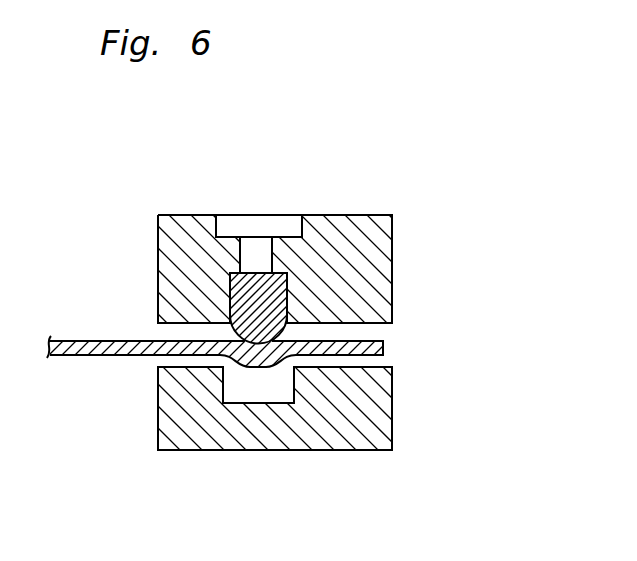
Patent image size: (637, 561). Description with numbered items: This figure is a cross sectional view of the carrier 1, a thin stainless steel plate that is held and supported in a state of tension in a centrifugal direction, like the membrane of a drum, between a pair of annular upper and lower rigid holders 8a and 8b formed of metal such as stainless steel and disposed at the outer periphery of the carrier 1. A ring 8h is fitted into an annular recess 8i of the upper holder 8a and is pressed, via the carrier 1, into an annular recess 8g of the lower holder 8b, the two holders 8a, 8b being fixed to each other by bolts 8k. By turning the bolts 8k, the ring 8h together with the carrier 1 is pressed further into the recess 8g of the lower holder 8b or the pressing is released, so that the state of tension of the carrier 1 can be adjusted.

The carrier 1 is at (383, 345).
The upper holder 8a is at (373, 256).
The lower holder 8b is at (373, 425).
The annular recess of the lower holder 8g is at (272, 405).
The ring 8h is at (243, 307).
The annular recess of the upper holder 8i is at (290, 298).
The bolts 8k is at (253, 223).